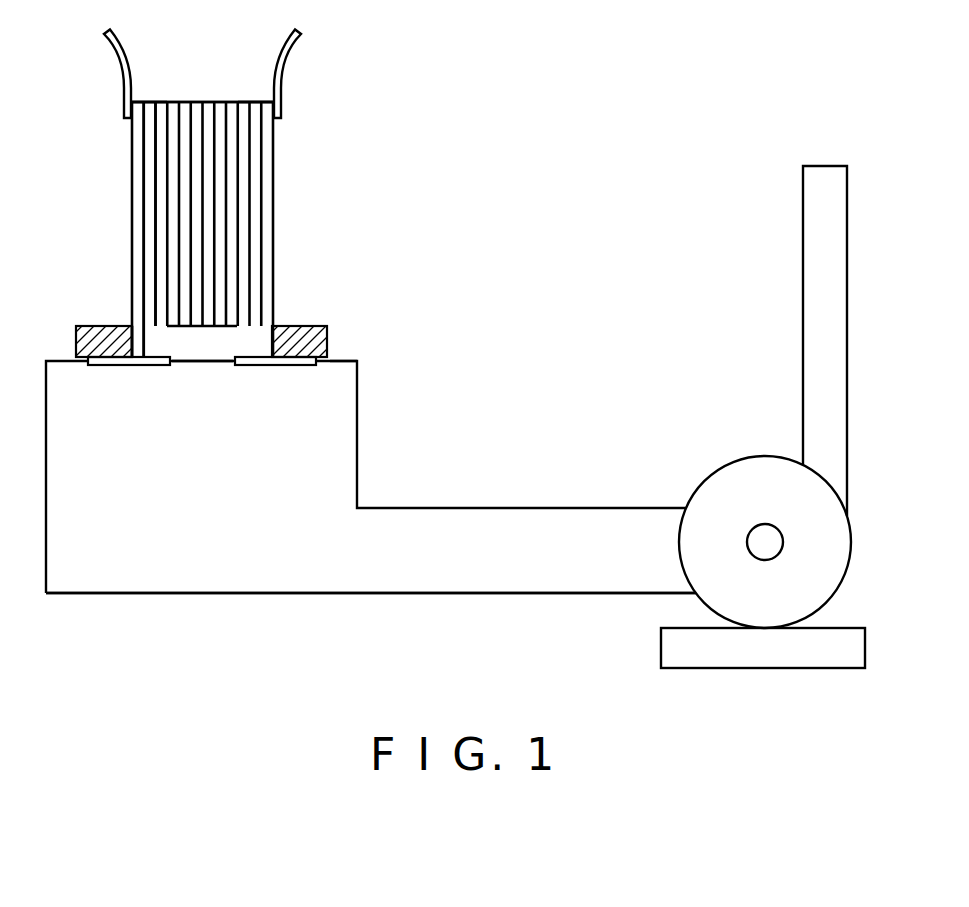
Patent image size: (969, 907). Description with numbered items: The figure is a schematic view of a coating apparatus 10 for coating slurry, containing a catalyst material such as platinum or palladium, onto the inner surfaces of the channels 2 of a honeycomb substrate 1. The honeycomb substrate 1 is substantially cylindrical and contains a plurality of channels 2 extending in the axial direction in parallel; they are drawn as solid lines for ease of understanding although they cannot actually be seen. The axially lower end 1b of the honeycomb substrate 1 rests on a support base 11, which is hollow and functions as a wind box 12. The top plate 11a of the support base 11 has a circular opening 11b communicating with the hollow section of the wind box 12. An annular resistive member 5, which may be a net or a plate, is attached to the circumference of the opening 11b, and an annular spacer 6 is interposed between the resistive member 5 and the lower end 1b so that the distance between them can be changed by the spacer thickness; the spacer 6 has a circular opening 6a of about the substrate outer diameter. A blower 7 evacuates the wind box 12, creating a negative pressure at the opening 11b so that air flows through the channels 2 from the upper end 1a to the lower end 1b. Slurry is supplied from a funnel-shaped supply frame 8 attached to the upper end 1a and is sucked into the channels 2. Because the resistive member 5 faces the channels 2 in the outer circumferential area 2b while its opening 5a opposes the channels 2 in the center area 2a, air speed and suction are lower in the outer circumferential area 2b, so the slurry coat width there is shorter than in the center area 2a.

The honeycomb substrate 1 is at (273, 165).
The upper end 1a is at (173, 102).
The lower end 1b is at (148, 366).
The channels 2 is at (148, 218).
The center area 2a is at (167, 330).
The outer circumferential area 2b is at (167, 100).
The resistive member 5 is at (283, 367).
The opening 5a is at (170, 362).
The annular spacer 6 is at (98, 325).
The circular opening 6a is at (265, 337).
The blower 7 is at (733, 461).
The supply frame 8 is at (283, 68).
The coating apparatus 10 is at (540, 117).
The support base 11 is at (357, 400).
The top plate 11a is at (342, 360).
The circular opening 11b is at (222, 366).
The wind box 12 is at (108, 582).